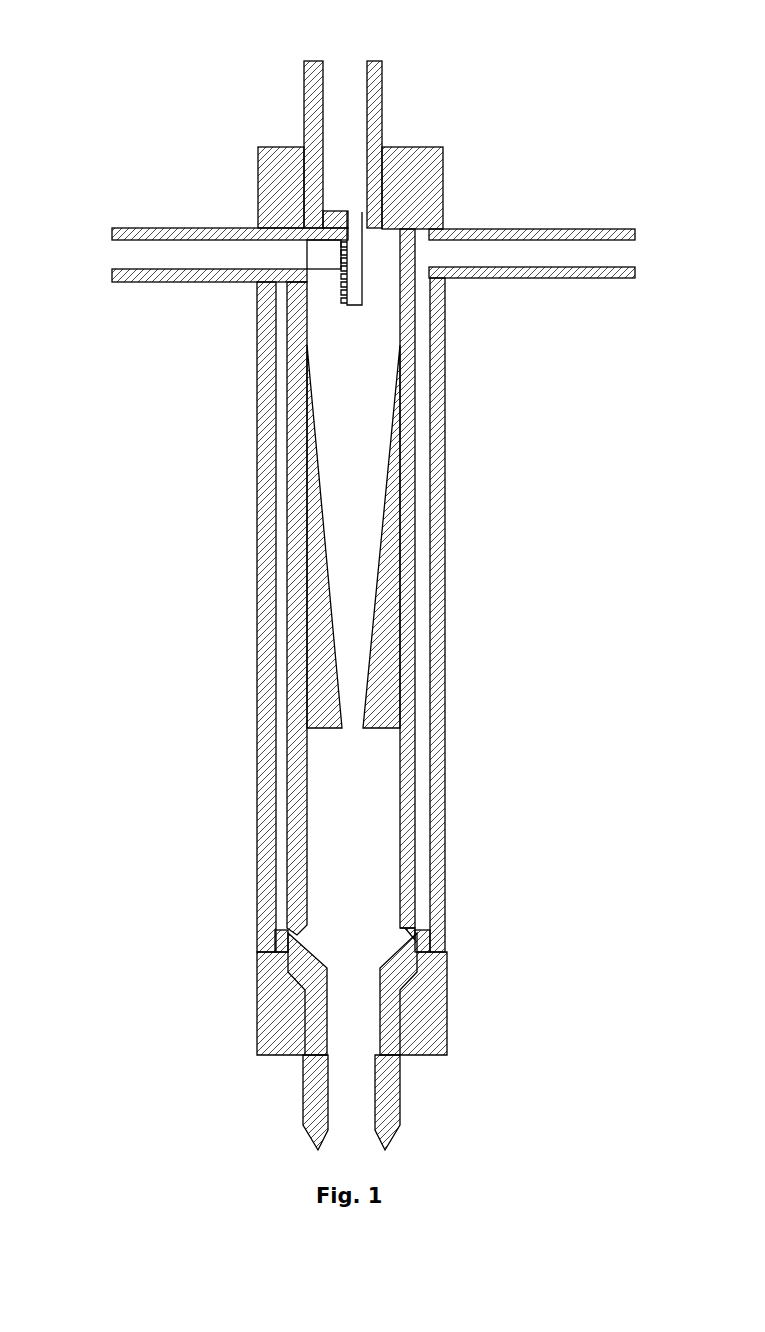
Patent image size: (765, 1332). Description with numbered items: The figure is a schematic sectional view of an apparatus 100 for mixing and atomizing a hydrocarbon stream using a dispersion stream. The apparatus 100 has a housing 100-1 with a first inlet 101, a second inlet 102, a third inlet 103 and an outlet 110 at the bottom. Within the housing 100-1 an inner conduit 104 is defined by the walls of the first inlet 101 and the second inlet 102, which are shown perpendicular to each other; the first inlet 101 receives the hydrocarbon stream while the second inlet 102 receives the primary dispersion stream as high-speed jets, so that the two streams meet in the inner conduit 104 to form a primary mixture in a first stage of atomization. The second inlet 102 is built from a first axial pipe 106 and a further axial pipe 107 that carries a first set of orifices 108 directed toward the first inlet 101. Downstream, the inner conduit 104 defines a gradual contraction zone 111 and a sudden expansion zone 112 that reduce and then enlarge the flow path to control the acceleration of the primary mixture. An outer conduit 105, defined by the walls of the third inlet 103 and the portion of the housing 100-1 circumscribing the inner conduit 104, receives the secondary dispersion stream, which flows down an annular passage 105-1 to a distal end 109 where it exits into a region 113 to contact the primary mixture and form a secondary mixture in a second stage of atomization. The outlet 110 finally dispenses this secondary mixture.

The apparatus 100 is at (623, 89).
The housing 100-1 is at (257, 506).
The first inlet 101 is at (125, 253).
The second inlet 102 is at (338, 92).
The third inlet 103 is at (604, 255).
The inner conduit 104 is at (371, 362).
The outer conduit 105 is at (427, 262).
The annular passage 105-1 is at (283, 770).
The first axial pipe 106 is at (337, 160).
The further axial pipe 107 is at (357, 253).
The first set of orifices 108 is at (335, 268).
The distal end 109 is at (292, 930).
The outlet 110 is at (347, 1147).
The gradual contraction zone 111 is at (347, 545).
The sudden expansion zone 112 is at (357, 875).
The region 113 is at (352, 948).